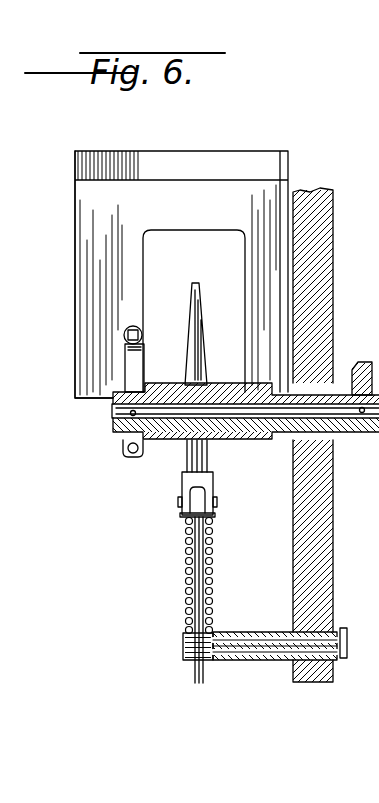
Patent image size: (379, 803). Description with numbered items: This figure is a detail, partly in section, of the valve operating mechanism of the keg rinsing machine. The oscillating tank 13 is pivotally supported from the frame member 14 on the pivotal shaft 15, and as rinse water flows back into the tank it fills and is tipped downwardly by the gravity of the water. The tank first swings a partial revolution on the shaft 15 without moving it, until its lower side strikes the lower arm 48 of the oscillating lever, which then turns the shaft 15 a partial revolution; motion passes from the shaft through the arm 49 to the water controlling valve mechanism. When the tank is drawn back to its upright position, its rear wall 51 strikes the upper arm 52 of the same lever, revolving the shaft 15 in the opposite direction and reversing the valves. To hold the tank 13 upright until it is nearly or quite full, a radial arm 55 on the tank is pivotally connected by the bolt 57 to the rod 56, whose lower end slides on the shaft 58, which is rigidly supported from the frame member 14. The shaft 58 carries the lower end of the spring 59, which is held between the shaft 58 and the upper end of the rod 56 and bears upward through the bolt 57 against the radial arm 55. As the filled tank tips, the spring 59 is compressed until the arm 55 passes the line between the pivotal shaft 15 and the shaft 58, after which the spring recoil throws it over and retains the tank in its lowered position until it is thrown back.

The oscillating tank 13 is at (181, 274).
The frame member 14 is at (325, 320).
The pivotal shaft 15 is at (118, 413).
The lower arm of oscillating lever 48 is at (130, 457).
The arm 49 is at (360, 428).
The rear wall 51 is at (92, 370).
The upper arm of oscillating lever 52 is at (138, 358).
The radial arm 55 is at (207, 463).
The rod 56 is at (203, 545).
The bolt 57 is at (217, 502).
The shaft 58 is at (240, 660).
The spring 59 is at (186, 578).